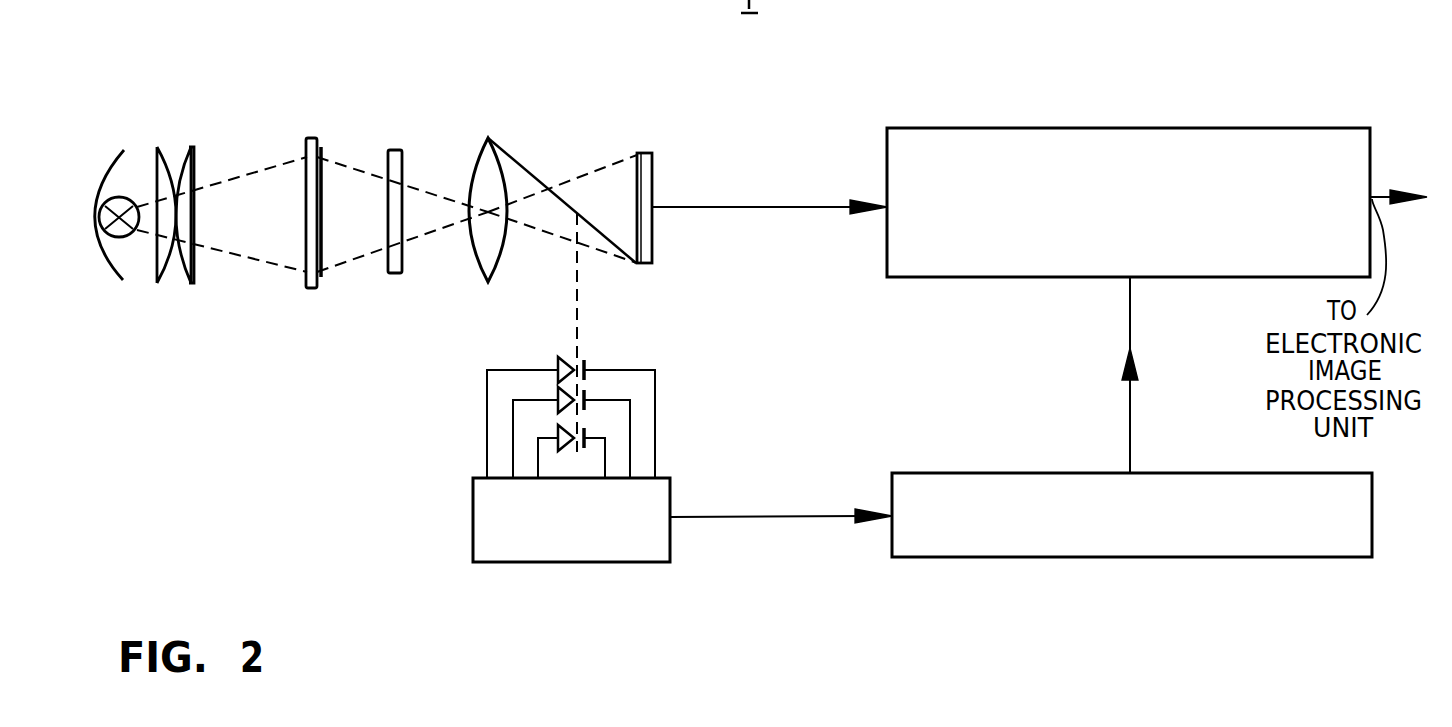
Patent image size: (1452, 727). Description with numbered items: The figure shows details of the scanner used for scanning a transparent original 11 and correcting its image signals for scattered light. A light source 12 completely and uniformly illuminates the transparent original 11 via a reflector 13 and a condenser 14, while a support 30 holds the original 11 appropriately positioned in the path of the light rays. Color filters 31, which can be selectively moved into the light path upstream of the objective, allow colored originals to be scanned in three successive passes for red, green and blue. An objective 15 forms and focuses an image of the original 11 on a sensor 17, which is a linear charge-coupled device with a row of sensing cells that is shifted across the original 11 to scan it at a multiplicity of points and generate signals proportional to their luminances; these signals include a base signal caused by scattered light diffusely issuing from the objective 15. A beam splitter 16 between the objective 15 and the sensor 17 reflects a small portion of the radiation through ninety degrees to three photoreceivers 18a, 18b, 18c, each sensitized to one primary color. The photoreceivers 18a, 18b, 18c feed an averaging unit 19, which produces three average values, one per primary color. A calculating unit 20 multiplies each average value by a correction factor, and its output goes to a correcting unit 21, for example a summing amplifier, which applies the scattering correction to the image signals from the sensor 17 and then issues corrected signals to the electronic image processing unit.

The transparent original 11 is at (322, 195).
The light source 12 is at (122, 198).
The reflector 13 is at (123, 272).
The condenser 14 is at (167, 277).
The objective 15 is at (482, 167).
The beam splitter 16 is at (528, 170).
The sensor 17 is at (643, 153).
The photoreceiver 18a is at (555, 363).
The photoreceiver 18b is at (555, 396).
The photoreceiver 18c is at (555, 432).
The averaging unit 19 is at (473, 530).
The calculating unit 20 is at (922, 547).
The correcting unit 21 is at (1038, 137).
The support 30 is at (307, 148).
The color filters 31 is at (395, 158).